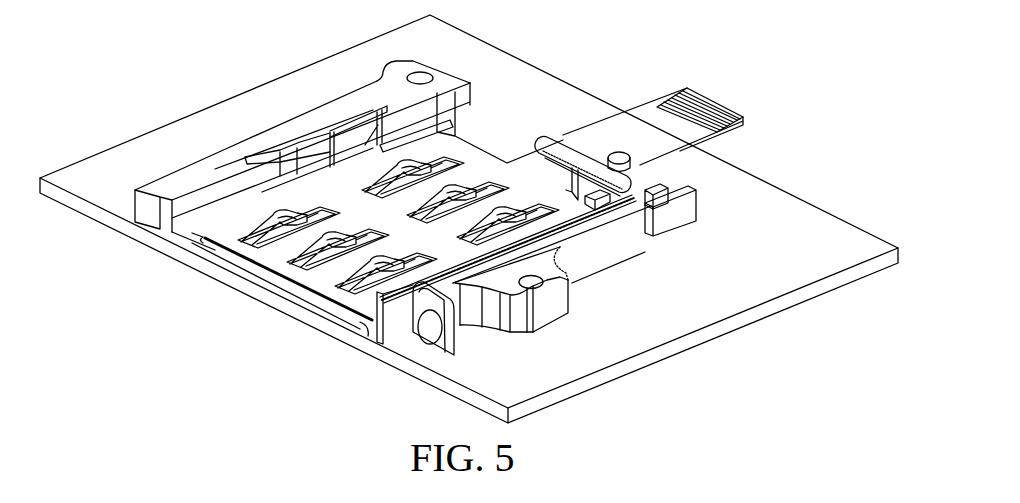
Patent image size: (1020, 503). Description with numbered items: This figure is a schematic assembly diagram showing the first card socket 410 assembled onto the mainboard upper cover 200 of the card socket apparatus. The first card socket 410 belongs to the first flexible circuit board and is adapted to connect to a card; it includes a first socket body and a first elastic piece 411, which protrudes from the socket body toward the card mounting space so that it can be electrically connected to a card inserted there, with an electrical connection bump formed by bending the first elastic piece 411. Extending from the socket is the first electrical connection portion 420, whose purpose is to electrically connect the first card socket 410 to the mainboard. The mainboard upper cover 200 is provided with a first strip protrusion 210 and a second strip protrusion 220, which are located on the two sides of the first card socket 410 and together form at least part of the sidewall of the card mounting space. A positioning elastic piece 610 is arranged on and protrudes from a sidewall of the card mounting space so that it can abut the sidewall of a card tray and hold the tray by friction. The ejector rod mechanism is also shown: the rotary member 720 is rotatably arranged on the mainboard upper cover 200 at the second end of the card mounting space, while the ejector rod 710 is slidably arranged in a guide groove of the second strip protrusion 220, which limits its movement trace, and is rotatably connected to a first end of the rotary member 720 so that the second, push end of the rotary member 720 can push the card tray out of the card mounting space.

The mainboard upper cover 200 is at (263, 112).
The first strip protrusion 210 is at (182, 182).
The second strip protrusion 220 is at (550, 298).
The first card socket 410 is at (228, 241).
The first elastic piece 411 is at (303, 258).
The first electrical connection portion 420 is at (673, 104).
The positioning elastic piece 610 is at (567, 230).
The ejector rod 710 is at (432, 332).
The rotary member 720 is at (636, 172).